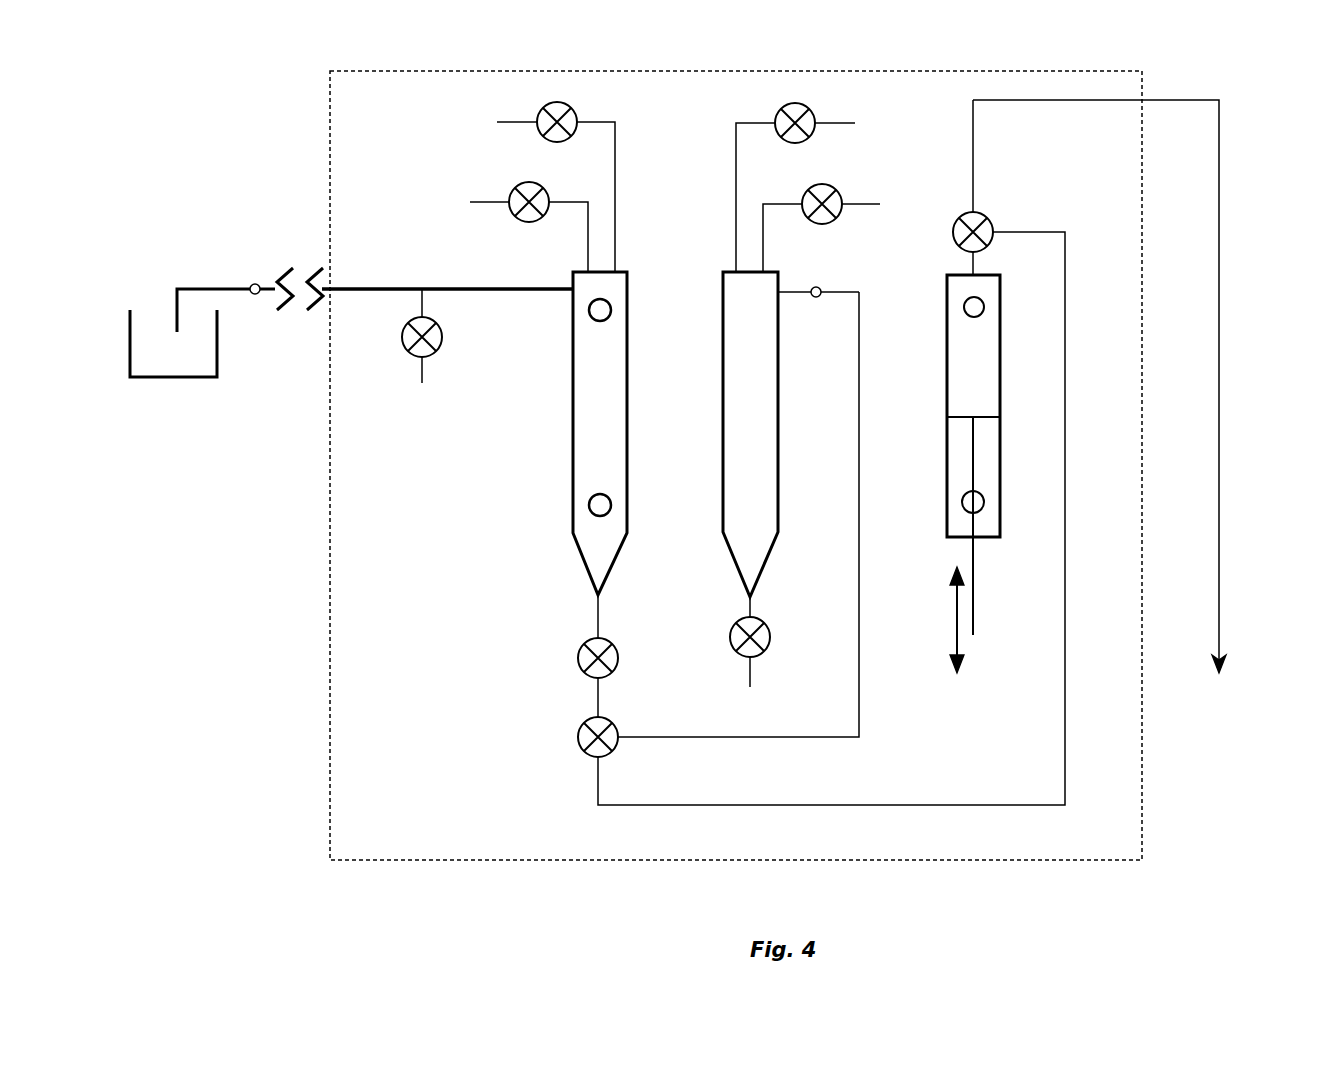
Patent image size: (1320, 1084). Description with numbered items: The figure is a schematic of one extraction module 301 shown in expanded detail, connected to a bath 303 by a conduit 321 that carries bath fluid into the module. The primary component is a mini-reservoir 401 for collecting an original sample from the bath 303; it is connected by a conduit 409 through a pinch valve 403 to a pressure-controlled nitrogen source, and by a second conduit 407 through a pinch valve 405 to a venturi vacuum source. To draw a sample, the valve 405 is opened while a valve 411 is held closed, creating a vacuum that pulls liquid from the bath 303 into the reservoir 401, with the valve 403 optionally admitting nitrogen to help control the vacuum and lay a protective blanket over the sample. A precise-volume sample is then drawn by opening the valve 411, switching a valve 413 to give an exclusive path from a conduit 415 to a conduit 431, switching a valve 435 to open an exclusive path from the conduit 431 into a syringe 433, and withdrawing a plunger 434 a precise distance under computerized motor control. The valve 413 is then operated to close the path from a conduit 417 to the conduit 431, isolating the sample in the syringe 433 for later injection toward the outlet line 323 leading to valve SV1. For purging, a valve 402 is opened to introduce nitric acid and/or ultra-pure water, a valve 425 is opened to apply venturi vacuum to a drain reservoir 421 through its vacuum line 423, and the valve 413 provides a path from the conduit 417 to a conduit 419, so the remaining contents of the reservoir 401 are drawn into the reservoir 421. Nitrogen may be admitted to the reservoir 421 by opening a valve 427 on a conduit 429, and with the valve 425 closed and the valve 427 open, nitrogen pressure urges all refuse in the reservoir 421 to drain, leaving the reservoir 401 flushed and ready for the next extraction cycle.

The extraction module 301 is at (329, 535).
The bath 303 is at (180, 378).
The conduit 321 is at (207, 288).
The output line to SV1 323 is at (1220, 228).
The mini-reservoir 401 is at (571, 447).
The valve 402 is at (426, 318).
The pinch valve 403 is at (525, 224).
The pinch valve 405 is at (563, 103).
The second conduit 407 is at (616, 218).
The conduit 409 is at (578, 200).
The valve 411 is at (578, 657).
The valve 413 is at (578, 737).
The conduit 415 is at (600, 628).
The conduit 417 is at (600, 700).
The conduit 419 is at (693, 740).
The reservoir 421 is at (721, 427).
The venturi line 423 is at (734, 195).
The valve 425 is at (798, 103).
The valve 427 is at (824, 184).
The conduit 429 is at (764, 256).
The conduit 431 is at (772, 805).
The syringe 433 is at (946, 392).
The plunger 434 is at (976, 615).
The valve 435 is at (992, 187).